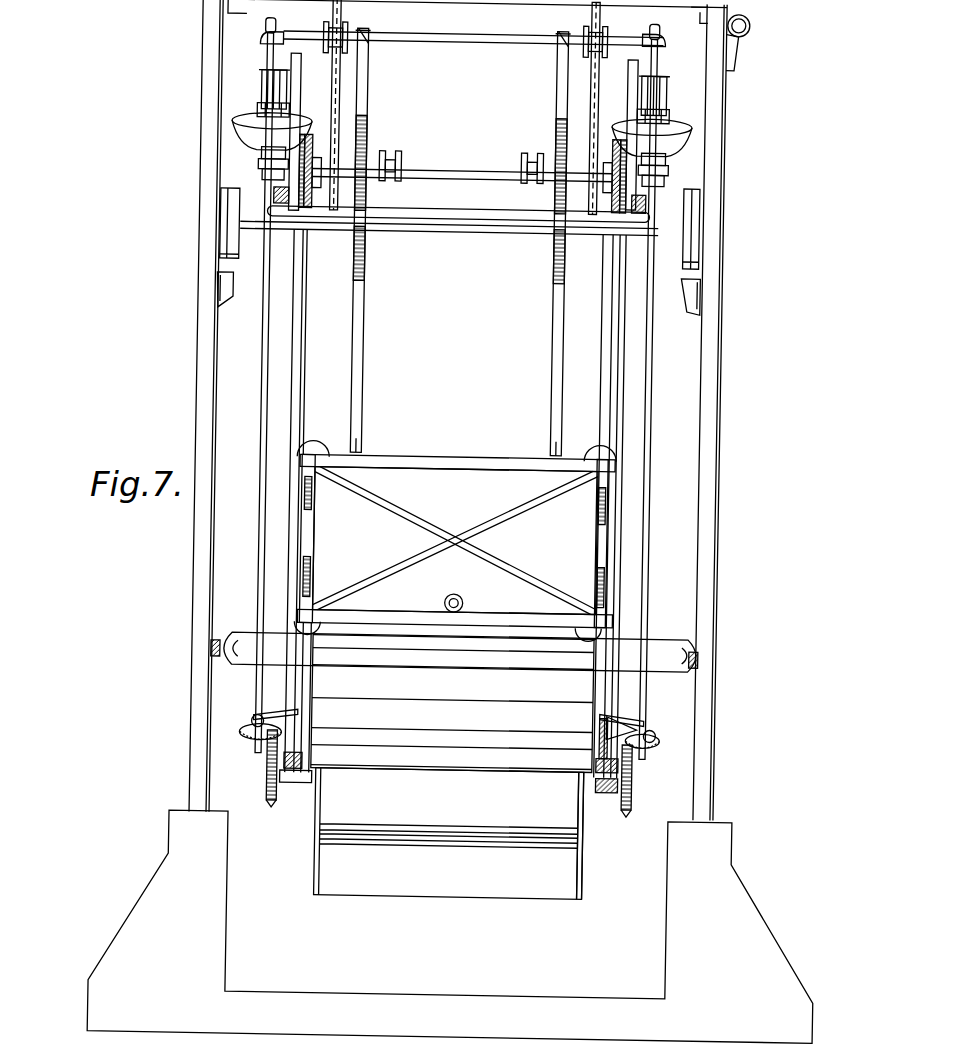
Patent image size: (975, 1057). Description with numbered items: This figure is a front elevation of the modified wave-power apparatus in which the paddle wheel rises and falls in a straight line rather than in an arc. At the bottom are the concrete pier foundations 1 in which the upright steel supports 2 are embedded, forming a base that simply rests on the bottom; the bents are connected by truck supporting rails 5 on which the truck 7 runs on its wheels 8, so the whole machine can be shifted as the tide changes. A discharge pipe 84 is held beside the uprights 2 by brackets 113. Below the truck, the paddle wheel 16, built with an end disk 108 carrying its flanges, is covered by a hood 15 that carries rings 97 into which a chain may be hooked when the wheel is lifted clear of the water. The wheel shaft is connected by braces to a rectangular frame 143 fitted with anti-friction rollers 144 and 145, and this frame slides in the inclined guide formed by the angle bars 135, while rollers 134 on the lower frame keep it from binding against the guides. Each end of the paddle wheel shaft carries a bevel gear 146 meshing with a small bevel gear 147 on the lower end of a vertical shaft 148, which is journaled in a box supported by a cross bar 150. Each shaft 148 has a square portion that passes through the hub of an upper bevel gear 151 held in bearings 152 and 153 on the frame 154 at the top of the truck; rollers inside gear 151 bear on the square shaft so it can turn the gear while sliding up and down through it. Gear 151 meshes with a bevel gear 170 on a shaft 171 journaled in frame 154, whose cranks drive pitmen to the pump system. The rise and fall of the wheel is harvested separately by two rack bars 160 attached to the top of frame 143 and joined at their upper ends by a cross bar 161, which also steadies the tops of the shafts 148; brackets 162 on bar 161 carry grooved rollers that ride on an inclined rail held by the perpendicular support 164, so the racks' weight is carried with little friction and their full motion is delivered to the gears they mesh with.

The pier foundation 1 is at (680, 916).
The steel support 2 is at (715, 440).
The truck supporting rail 5 is at (230, 283).
The truck 7 is at (268, 202).
The wheel 8 is at (234, 250).
The hood 15 is at (420, 714).
The paddle wheel 16 is at (320, 835).
The discharge pipe 84 is at (741, 19).
The ring 97 is at (455, 594).
The disk 108 is at (588, 836).
The bracket 113 is at (727, 45).
The roller 134 is at (682, 642).
The angle bar 135 is at (303, 336).
The rectangular frame 143 is at (318, 560).
The anti-friction roller 144 is at (322, 492).
The anti-friction roller 145 is at (323, 452).
The bevel gear 146 is at (275, 806).
The small bevel gear 147 is at (258, 744).
The shaft 148 is at (266, 36).
The cross bar 150 is at (256, 720).
The bevel gear 151 is at (245, 130).
The bearing 152 is at (256, 178).
The bearing 153 is at (254, 88).
The frame 154 is at (290, 116).
The rack bar 160 is at (362, 348).
The cross bar 161 is at (470, 45).
The bracket 162 is at (342, 32).
The perpendicular support 164 is at (333, 92).
The bevel gear 170 is at (308, 152).
The shaft 171 is at (424, 172).